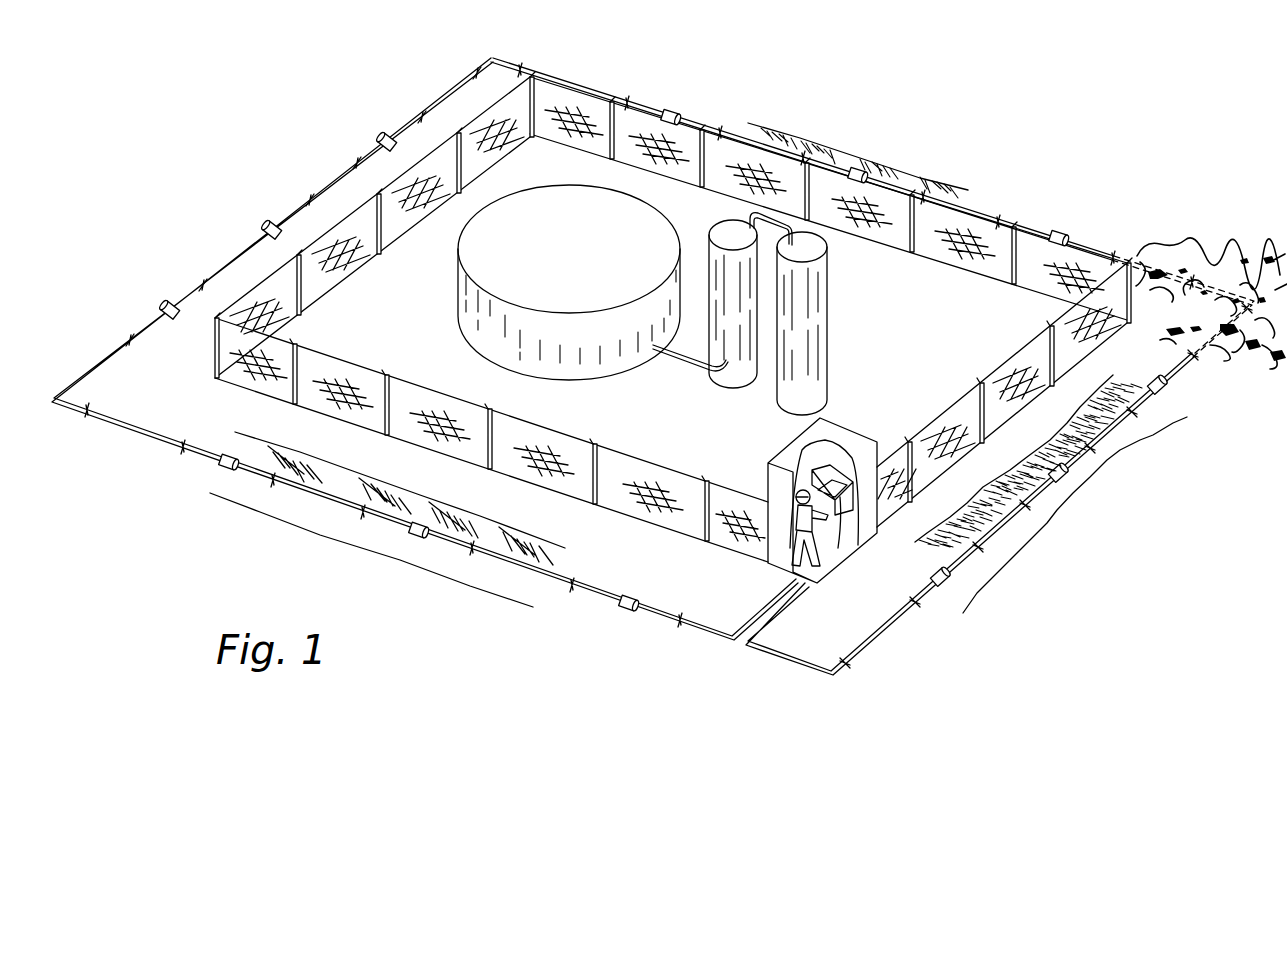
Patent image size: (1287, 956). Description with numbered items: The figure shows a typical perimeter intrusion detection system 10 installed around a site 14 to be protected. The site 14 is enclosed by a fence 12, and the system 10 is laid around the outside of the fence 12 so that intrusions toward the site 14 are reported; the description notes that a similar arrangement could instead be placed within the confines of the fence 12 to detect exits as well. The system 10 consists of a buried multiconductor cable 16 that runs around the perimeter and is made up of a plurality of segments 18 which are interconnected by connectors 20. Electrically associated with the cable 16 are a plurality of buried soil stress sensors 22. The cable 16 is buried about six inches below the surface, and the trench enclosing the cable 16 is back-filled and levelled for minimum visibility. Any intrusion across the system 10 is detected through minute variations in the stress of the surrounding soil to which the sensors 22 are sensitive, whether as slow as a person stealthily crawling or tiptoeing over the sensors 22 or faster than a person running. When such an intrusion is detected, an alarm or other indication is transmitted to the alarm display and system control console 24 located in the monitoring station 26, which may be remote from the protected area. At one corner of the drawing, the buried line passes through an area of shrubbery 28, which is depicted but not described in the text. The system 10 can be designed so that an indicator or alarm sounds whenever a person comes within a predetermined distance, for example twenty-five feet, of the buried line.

The perimeter intrusion detection system 10 is at (407, 96).
The fence 12 is at (688, 135).
The site 14 is at (540, 202).
The buried multiconductor cable 16 is at (657, 618).
The segments 18 is at (135, 436).
The connectors 20 is at (220, 470).
The buried soil stress sensors 22 is at (848, 670).
The alarm display and system control console 24 is at (828, 468).
The monitoring station 26 is at (797, 450).
The shrubbery 28 is at (1211, 303).